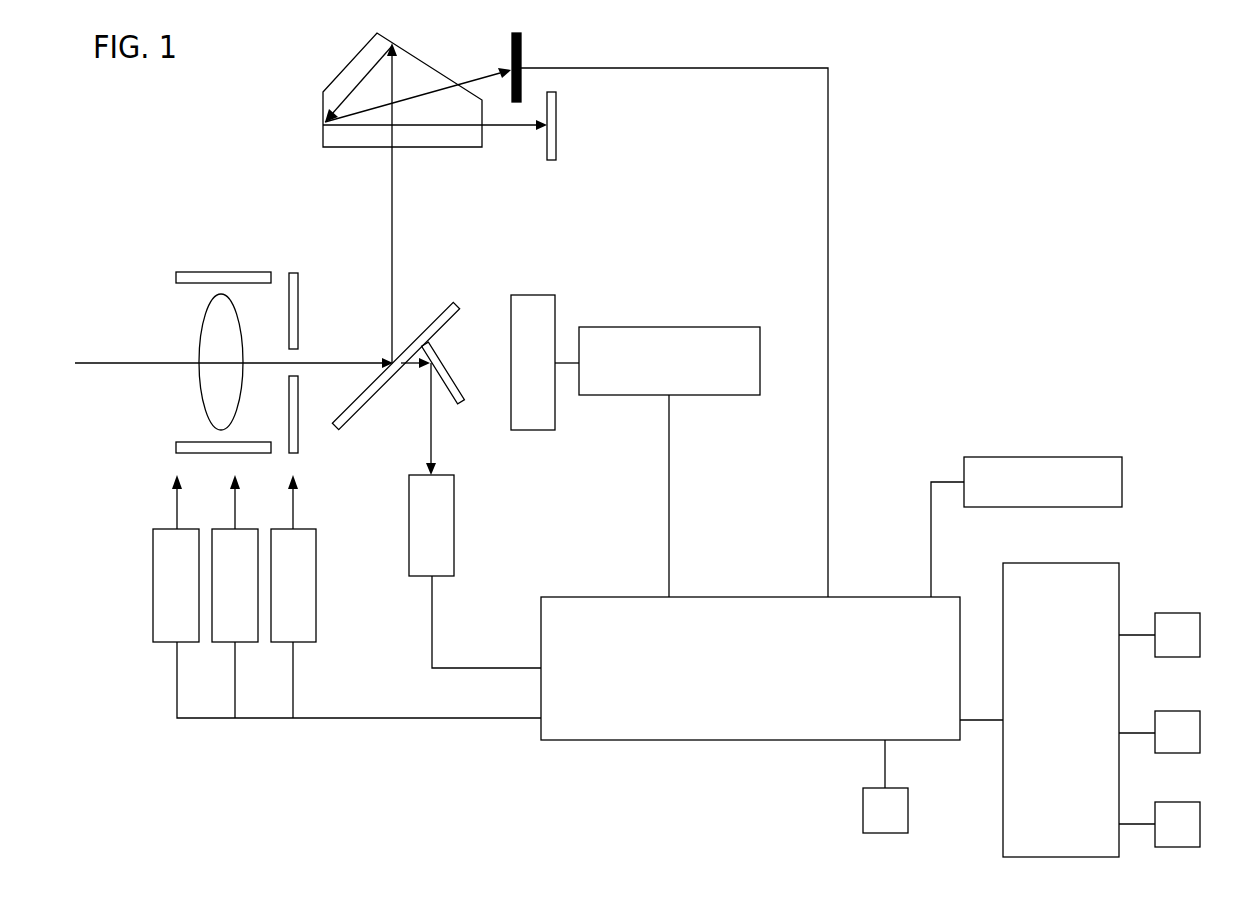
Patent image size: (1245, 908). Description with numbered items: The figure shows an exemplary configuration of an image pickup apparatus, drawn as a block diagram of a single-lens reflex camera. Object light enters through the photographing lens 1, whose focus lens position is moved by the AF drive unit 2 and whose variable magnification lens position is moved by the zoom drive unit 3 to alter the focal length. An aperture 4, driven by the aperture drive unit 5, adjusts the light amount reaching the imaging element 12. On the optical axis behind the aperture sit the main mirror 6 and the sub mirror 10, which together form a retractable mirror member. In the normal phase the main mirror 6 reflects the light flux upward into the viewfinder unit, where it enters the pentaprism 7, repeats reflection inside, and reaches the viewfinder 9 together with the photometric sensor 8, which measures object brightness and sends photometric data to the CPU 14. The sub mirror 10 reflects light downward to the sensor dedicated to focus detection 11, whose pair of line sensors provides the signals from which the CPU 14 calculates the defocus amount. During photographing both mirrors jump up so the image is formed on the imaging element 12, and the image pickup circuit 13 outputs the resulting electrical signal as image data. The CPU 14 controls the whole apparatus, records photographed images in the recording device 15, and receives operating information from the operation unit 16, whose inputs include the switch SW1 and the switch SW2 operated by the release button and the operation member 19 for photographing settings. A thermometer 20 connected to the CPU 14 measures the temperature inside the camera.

The photographing lens 1 is at (205, 306).
The AF drive unit 2 is at (167, 529).
The zoom drive unit 3 is at (225, 529).
The aperture 4 is at (296, 272).
The aperture drive unit 5 is at (285, 529).
The main mirror 6 is at (441, 314).
The pentaprism 7 is at (323, 92).
The photometric sensor 8 is at (512, 38).
The viewfinder 9 is at (557, 112).
The sub mirror 10 is at (447, 367).
The sensor dedicated to focus detection 11 is at (418, 475).
The imaging element 12 is at (538, 295).
The image pickup circuit 13 is at (722, 327).
The CPU 14 is at (590, 597).
The recording device 15 is at (1090, 457).
The operation unit 16 is at (1080, 563).
The switch SW1 is at (1185, 613).
The switch SW2 is at (1185, 711).
The operation member 19 is at (1185, 802).
The thermometer 20 is at (900, 788).